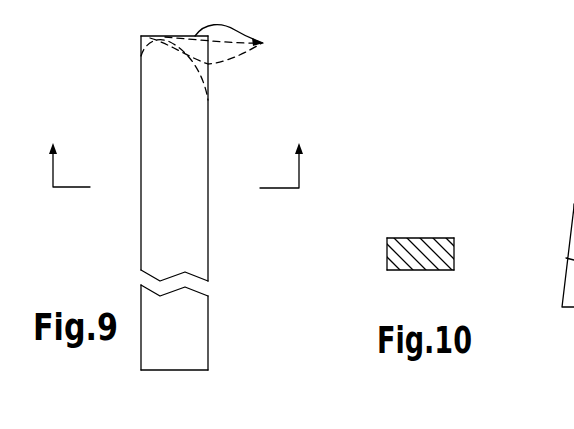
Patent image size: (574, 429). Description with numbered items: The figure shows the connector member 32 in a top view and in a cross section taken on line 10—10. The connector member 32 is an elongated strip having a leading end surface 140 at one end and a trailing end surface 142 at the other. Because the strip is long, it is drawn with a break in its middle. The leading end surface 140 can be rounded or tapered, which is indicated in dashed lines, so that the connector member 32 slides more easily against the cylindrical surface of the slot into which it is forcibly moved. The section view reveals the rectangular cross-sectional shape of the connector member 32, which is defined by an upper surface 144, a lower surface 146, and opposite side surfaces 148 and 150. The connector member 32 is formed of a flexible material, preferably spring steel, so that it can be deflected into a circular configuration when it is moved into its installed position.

In FIG. 9, the section line 10— 10 is at (181, 153).
In FIG. 9, the connector member 32 is at (176, 223).
In FIG. 10, the connector member 32 is at (427, 237).
In FIG. 9, the leading end surface 140 is at (226, 62).
In FIG. 9, the trailing end surface 142 is at (183, 370).
In FIG. 9, the upper surface 144 is at (190, 232).
In FIG. 10, the upper surface 144 is at (414, 238).
In FIG. 10, the lower surface 146 is at (420, 270).
In FIG. 9, the side surface 148 is at (141, 244).
In FIG. 10, the side surface 148 is at (387, 256).
In FIG. 9, the side surface 150 is at (208, 248).
In FIG. 10, the side surface 150 is at (454, 250).